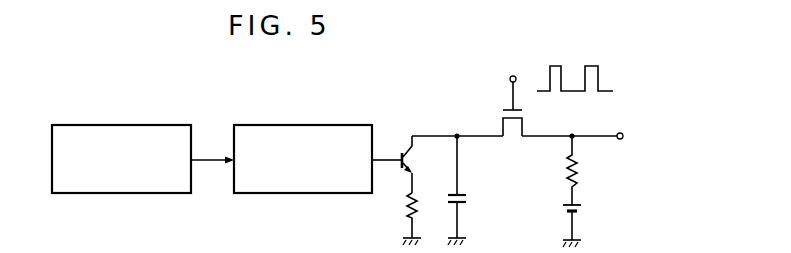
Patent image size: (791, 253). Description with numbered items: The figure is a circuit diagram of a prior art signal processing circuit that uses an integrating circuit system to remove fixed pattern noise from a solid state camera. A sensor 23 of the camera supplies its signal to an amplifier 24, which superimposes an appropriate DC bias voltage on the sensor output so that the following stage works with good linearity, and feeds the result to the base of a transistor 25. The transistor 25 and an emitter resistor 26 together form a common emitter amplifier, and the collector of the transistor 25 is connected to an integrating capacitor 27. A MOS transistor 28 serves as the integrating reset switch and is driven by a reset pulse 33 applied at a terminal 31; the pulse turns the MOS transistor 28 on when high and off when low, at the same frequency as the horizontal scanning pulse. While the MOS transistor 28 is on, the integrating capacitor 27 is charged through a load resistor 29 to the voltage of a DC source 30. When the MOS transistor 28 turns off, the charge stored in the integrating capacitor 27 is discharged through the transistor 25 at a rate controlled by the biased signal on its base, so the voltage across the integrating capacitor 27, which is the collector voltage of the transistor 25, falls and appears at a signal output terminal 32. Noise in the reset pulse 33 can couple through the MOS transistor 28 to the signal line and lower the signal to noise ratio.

The sensor 23 is at (128, 125).
The amplifier 24 is at (314, 125).
The transistor 25 is at (413, 153).
The emitter resistor 26 is at (408, 206).
The integrating capacitor 27 is at (467, 197).
The MOS transistor 28 is at (513, 138).
The load resistor 29 is at (580, 160).
The DC source 30 is at (580, 210).
The terminal 31 is at (510, 79).
The signal output terminal 32 is at (626, 134).
The reset pulse 33 is at (600, 82).